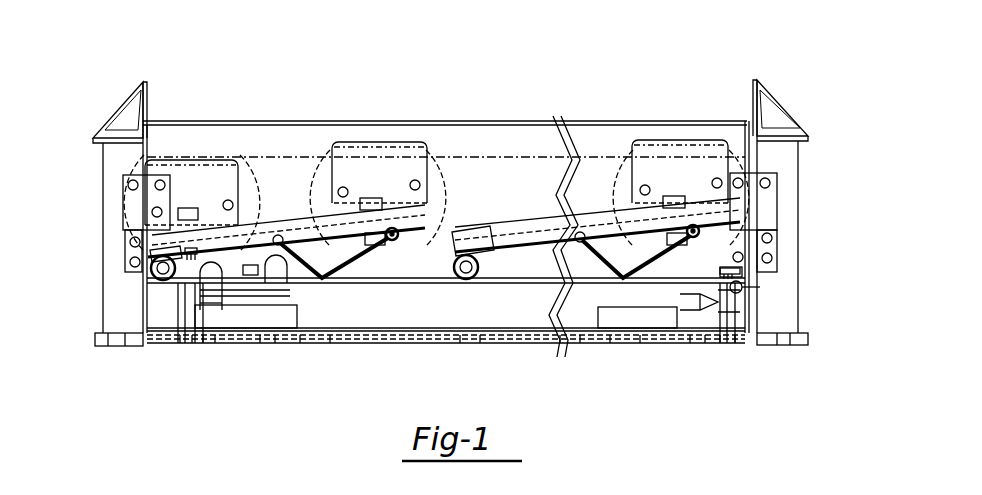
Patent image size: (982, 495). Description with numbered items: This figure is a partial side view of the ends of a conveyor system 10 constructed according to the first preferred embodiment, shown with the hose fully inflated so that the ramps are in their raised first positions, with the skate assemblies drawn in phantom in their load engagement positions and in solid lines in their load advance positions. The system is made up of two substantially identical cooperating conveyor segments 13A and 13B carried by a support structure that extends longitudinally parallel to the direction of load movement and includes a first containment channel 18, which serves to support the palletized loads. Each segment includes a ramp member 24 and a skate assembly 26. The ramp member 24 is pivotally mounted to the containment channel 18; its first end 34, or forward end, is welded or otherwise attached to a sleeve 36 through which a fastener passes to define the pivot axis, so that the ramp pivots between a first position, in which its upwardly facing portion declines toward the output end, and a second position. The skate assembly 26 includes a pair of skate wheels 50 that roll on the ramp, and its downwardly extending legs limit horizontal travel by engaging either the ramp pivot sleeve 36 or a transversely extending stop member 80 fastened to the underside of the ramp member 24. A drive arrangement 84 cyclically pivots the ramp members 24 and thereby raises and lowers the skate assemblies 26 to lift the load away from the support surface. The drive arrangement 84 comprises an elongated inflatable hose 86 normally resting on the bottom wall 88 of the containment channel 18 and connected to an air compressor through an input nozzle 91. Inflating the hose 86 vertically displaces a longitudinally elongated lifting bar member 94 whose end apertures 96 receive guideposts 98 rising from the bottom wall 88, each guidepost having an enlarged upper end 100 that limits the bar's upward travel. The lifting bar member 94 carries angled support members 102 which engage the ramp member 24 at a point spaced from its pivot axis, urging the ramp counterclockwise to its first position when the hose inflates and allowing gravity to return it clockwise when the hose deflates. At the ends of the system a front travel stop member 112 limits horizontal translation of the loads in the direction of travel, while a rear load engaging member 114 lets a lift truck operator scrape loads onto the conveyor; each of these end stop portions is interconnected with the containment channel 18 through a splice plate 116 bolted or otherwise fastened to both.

The conveyor system 10 is at (203, 56).
The conveyor segment 13A is at (292, 192).
The conveyor segment 13B is at (597, 192).
The first containment channel 18 is at (580, 123).
The ramp member 24 is at (418, 330).
The skate assembly 26 is at (170, 160).
The first end 34 is at (140, 258).
The sleeve 36 is at (158, 284).
The skate wheel 50 is at (260, 172).
The stop member 80 is at (390, 243).
The drive arrangement 84 is at (350, 334).
The inflatable hose 86 is at (318, 330).
The bottom wall 88 is at (387, 350).
The input nozzle 91 is at (222, 290).
The lifting bar member 94 is at (677, 330).
The aperture 96 is at (740, 288).
The guidepost 98 is at (204, 340).
The enlarged upper end 100 is at (170, 248).
The angled support member 102 is at (352, 268).
The front travel stop member 112 is at (111, 157).
The rear load engaging member 114 is at (790, 157).
The splice plate 116 is at (138, 240).